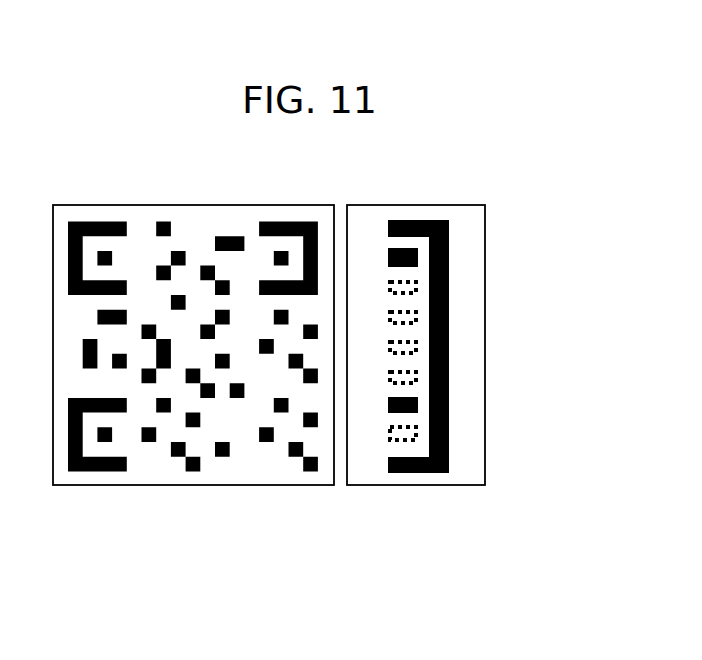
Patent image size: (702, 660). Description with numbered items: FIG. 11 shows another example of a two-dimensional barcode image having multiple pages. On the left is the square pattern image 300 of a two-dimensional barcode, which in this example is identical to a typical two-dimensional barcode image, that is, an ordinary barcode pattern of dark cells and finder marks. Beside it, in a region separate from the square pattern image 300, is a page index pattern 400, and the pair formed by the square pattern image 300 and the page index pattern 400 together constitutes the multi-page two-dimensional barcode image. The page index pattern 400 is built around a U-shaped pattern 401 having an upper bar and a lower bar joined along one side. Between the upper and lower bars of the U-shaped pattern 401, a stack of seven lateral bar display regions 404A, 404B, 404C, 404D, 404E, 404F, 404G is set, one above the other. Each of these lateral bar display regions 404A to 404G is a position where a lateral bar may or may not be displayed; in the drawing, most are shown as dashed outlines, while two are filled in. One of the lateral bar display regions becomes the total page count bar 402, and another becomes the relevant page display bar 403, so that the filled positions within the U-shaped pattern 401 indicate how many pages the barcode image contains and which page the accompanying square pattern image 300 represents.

The square pattern image 300 is at (222, 477).
The page index pattern 400 is at (385, 477).
The U-shaped pattern 401 is at (429, 220).
The total page count bar 402 is at (418, 405).
The relevant page display bar 403 is at (412, 255).
The lateral bar display region 404A is at (418, 262).
The lateral bar display region 404B is at (418, 291).
The lateral bar display region 404C is at (418, 321).
The lateral bar display region 404D is at (418, 351).
The lateral bar display region 404E is at (418, 381).
The lateral bar display region 404F is at (419, 411).
The lateral bar display region 404G is at (418, 438).